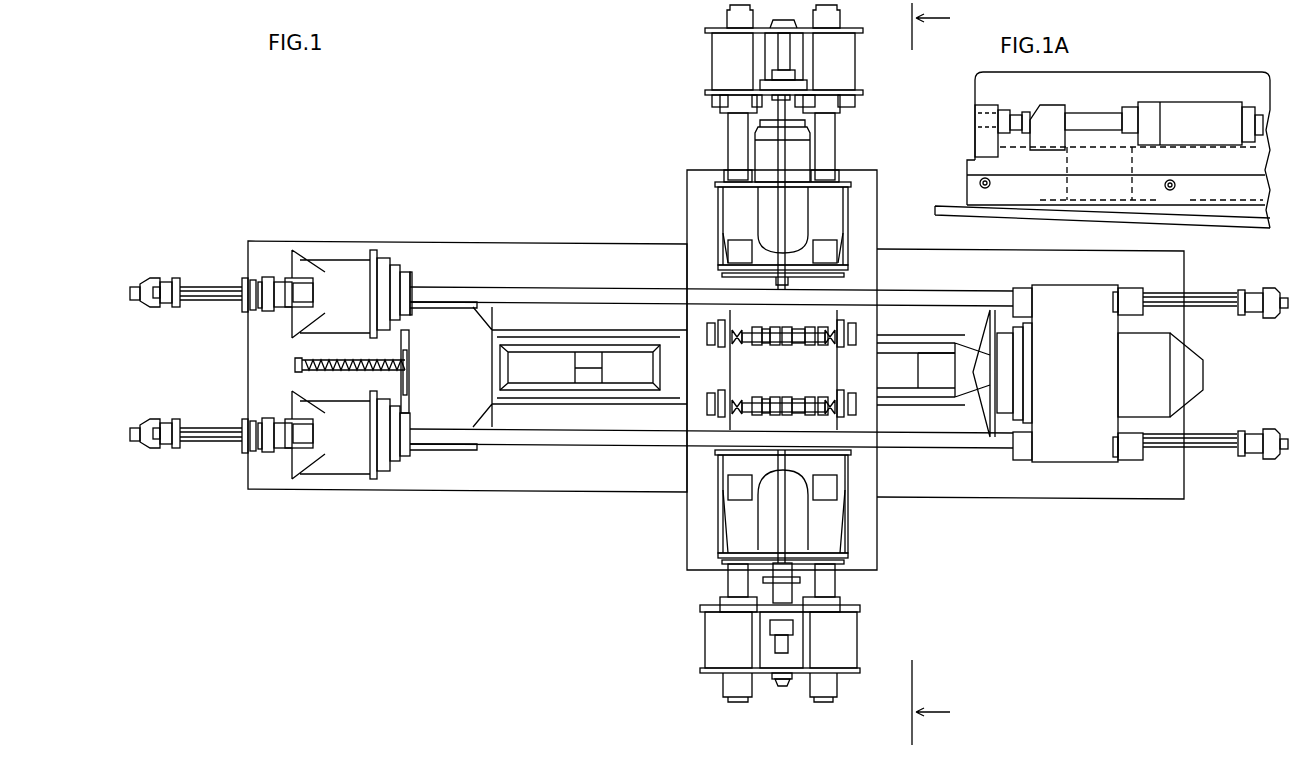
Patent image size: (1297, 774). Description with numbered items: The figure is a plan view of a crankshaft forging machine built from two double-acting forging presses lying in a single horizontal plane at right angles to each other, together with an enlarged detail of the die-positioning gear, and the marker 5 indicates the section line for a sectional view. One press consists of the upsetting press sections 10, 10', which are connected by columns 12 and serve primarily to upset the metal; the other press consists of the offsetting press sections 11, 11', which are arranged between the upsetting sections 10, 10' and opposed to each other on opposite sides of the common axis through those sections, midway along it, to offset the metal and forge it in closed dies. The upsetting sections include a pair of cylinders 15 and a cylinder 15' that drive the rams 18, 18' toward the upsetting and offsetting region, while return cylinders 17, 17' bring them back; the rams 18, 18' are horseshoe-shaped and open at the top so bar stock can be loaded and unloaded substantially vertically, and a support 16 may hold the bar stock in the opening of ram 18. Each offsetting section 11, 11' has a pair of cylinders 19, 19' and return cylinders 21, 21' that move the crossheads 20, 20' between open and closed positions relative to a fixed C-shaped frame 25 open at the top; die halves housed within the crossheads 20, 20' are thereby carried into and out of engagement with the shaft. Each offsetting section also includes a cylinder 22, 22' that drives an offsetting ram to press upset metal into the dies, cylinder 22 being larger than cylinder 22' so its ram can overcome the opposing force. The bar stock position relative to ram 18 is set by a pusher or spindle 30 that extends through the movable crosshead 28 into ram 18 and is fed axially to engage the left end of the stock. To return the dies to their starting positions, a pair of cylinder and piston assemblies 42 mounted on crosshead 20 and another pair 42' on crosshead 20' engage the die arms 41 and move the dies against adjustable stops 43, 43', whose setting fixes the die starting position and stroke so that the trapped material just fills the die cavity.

In FIG. 1, the upsetting press section 10 is at (437, 267).
In FIG. 1, the upsetting press section 10' is at (1057, 345).
In FIG. 1, the offsetting press section 11 is at (935, 370).
In FIG. 1, the offsetting press section 11' is at (825, 533).
In FIG. 1, the columns 12 is at (552, 298).
In FIG. 1, the cylinders 15 is at (342, 364).
In FIG. 1, the cylinder 15' is at (1186, 375).
In FIG. 1, the support 16 is at (590, 357).
In FIG. 1, the return cylinder 17 is at (207, 370).
In FIG. 1, the return cylinder 17' is at (1200, 378).
In FIG. 1, the ram 18 is at (734, 415).
In FIG. 1, the ram 18' is at (944, 440).
In FIG. 1, the cylinders 19 is at (782, 93).
In FIG. 1, the cylinders 19' is at (780, 653).
In FIG. 1, the crosshead 20 is at (745, 253).
In FIG. 1, the crosshead 20' is at (753, 487).
In FIG. 1, the return cylinder 21 is at (742, 161).
In FIG. 1, the return cylinder 21' is at (723, 614).
In FIG. 1, the cylinder 22 is at (815, 151).
In FIG. 1, the cylinder 22' is at (836, 526).
In FIG. 1, the C-shaped frame 25 is at (730, 214).
In FIG. 1, the movable crosshead 28 is at (433, 418).
In FIG. 1, the pusher or spindle 30 is at (295, 364).
In FIG. 1, the arms 41 is at (783, 349).
In FIG. 1A, the arms 41 is at (1062, 115).
In FIG. 1, the cylinder and piston assemblies 42 is at (838, 304).
In FIG. 1A, the cylinder and piston assemblies 42 is at (1164, 92).
In FIG. 1, the cylinder and piston assemblies 42' is at (841, 439).
In FIG. 1, the adjustable stops 43 is at (783, 328).
In FIG. 1A, the adjustable stops 43 is at (1004, 119).
In FIG. 1, the adjustable stops 43' is at (786, 413).
In FIG. 1, the section line 5- 5 is at (918, 374).